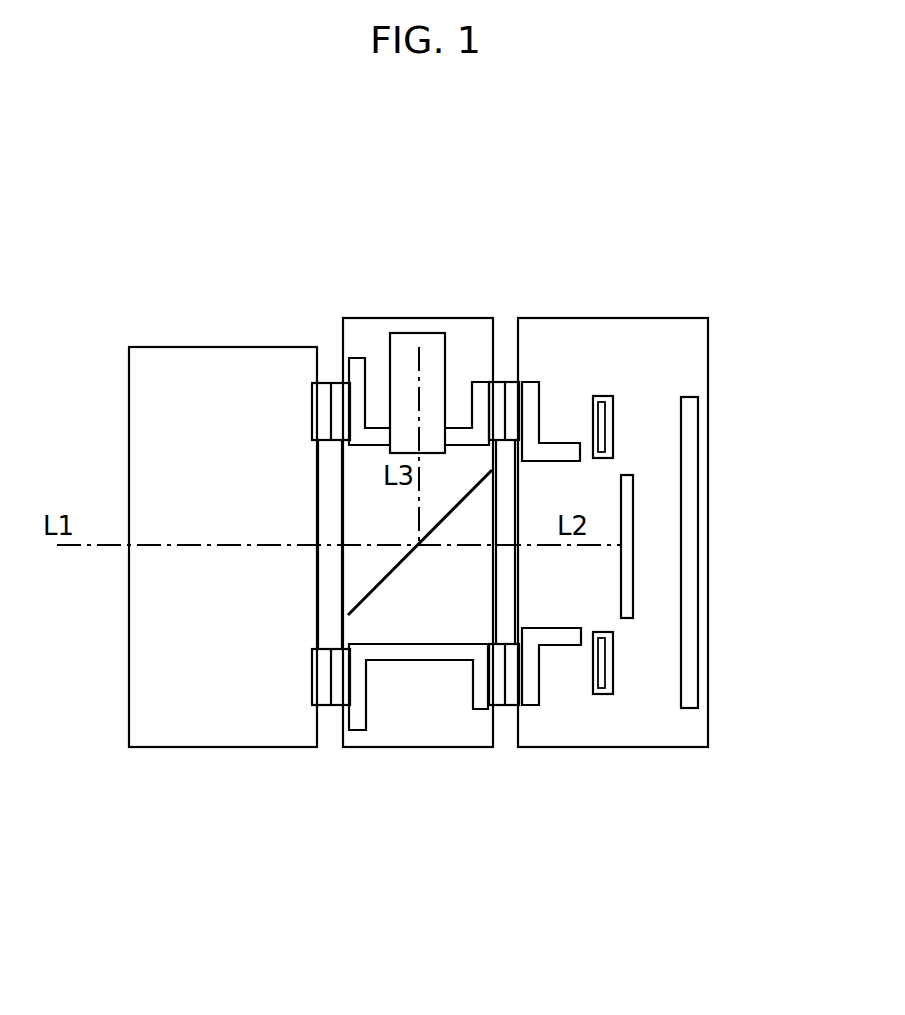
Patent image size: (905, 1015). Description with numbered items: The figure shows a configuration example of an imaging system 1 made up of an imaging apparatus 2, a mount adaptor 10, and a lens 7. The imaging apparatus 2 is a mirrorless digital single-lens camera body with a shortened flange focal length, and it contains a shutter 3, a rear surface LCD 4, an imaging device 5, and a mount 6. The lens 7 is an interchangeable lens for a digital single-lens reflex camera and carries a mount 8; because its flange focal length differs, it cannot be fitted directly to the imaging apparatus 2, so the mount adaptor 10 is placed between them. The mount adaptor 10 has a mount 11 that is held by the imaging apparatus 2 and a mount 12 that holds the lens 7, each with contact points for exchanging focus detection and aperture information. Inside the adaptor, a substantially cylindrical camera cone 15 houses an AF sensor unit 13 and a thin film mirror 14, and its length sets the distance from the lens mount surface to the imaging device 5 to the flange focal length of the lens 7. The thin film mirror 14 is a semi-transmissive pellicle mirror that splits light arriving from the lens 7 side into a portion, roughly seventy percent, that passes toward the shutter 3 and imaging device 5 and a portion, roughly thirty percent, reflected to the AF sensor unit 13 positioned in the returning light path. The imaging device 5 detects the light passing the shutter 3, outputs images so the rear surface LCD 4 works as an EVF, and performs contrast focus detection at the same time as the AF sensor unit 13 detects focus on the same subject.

The imaging system 1 is at (644, 173).
The imaging apparatus 2 is at (686, 318).
The shutter 3 is at (613, 421).
The rear surface LCD 4 is at (698, 473).
The imaging device 5 is at (626, 618).
The mount 6 is at (511, 382).
The lens 7 is at (161, 347).
The mount 8 is at (325, 383).
The mount adaptor 10 is at (450, 318).
The mount 11 is at (500, 382).
The mount 12 is at (338, 383).
The AF sensor unit 13 is at (410, 333).
The thin film mirror 14 is at (342, 590).
The camera cone 15 is at (425, 748).